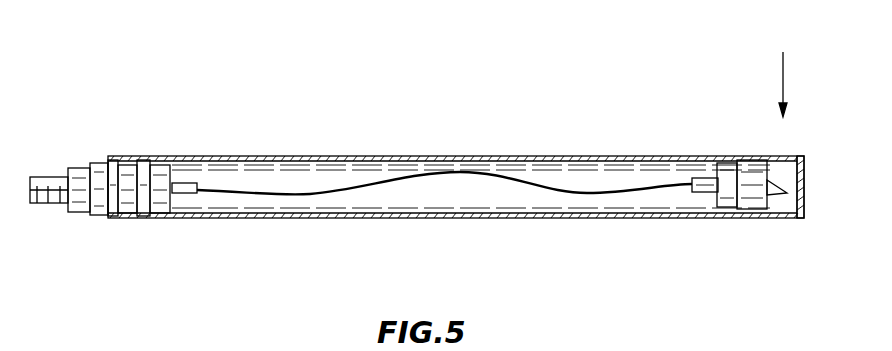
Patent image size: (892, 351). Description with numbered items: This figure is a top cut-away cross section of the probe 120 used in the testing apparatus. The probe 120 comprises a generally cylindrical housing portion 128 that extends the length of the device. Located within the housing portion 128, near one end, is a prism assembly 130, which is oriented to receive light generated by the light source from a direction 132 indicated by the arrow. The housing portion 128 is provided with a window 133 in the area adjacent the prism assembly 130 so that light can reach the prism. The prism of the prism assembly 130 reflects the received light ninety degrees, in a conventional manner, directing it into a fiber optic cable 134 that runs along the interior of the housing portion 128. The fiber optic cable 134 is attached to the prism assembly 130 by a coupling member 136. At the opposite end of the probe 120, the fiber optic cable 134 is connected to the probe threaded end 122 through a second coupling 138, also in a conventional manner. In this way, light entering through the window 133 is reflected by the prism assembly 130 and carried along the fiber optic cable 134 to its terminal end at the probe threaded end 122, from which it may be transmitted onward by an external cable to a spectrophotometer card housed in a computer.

The probe 120 is at (436, 149).
The probe threaded end 122 is at (45, 177).
The housing portion 128 is at (442, 220).
The prism assembly 130 is at (778, 220).
The direction 132 is at (783, 70).
The window 133 is at (777, 155).
The fiber optic cable 134 is at (367, 188).
The coupling member 136 is at (718, 155).
The second coupling 138 is at (142, 193).